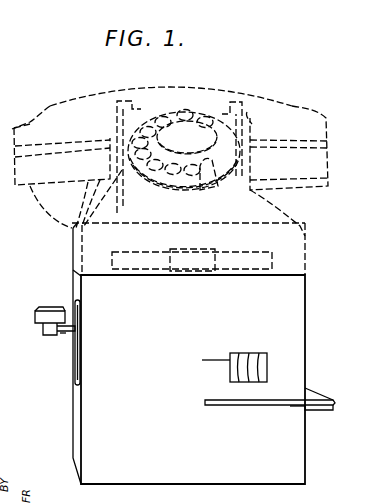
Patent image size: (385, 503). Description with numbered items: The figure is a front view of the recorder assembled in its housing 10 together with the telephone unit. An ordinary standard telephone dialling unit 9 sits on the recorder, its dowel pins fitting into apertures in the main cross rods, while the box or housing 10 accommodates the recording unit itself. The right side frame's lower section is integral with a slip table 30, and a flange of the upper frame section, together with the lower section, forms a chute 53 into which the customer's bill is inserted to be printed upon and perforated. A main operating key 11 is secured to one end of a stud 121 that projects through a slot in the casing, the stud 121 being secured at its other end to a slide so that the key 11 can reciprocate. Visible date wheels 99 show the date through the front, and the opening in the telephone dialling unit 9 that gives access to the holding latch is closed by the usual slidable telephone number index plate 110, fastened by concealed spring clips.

The telephone dialling unit 9 is at (262, 215).
The housing 10 is at (287, 303).
The main operating key 11 is at (38, 312).
The slip table 30 is at (318, 397).
The chute 53 is at (291, 407).
The visible date wheels 99 is at (262, 372).
The telephone number index plate 110 is at (250, 262).
The stud 121 is at (63, 338).